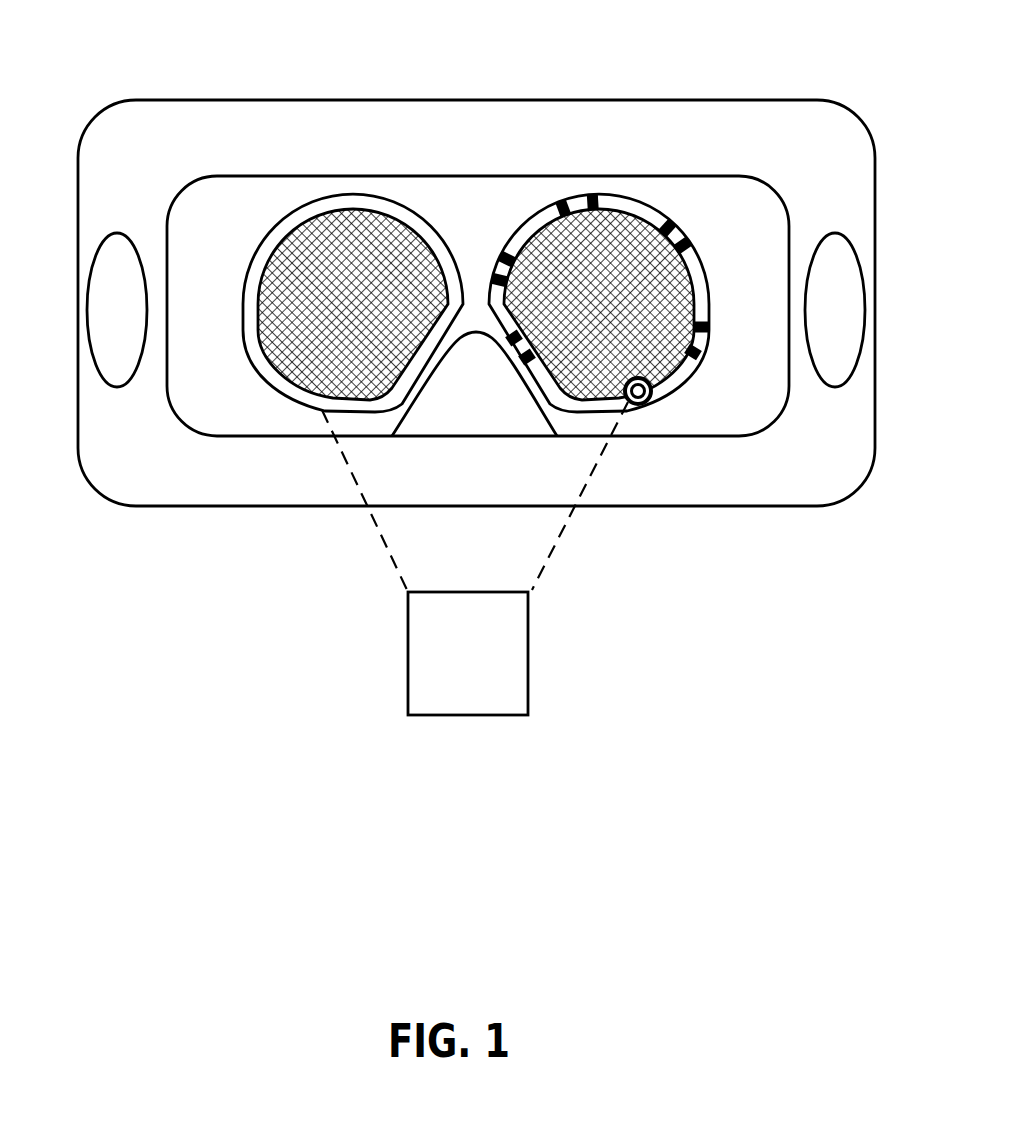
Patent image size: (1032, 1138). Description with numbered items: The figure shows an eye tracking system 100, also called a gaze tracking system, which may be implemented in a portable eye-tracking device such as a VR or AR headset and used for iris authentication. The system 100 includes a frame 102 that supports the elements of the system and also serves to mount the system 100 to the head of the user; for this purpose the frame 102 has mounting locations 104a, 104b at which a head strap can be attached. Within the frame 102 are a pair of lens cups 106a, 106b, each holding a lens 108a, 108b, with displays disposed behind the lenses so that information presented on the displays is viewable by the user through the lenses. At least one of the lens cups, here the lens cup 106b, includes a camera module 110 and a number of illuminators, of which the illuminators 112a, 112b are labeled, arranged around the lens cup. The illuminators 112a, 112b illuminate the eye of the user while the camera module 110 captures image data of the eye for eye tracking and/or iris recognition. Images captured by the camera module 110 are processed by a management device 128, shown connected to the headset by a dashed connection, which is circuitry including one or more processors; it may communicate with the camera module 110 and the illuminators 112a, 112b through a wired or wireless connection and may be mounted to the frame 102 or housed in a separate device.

The eye tracking system 100 is at (240, 60).
The frame 102 is at (748, 488).
The mounting location 104a is at (120, 335).
The mounting location 104b is at (832, 335).
The lens cup 106a is at (268, 372).
The lens cup 106b is at (677, 367).
The lens 108a is at (312, 265).
The lens 108b is at (665, 312).
The camera module 110 is at (647, 402).
The illuminator 112a is at (495, 250).
The illuminator 112b is at (603, 193).
The management device 128 is at (524, 694).